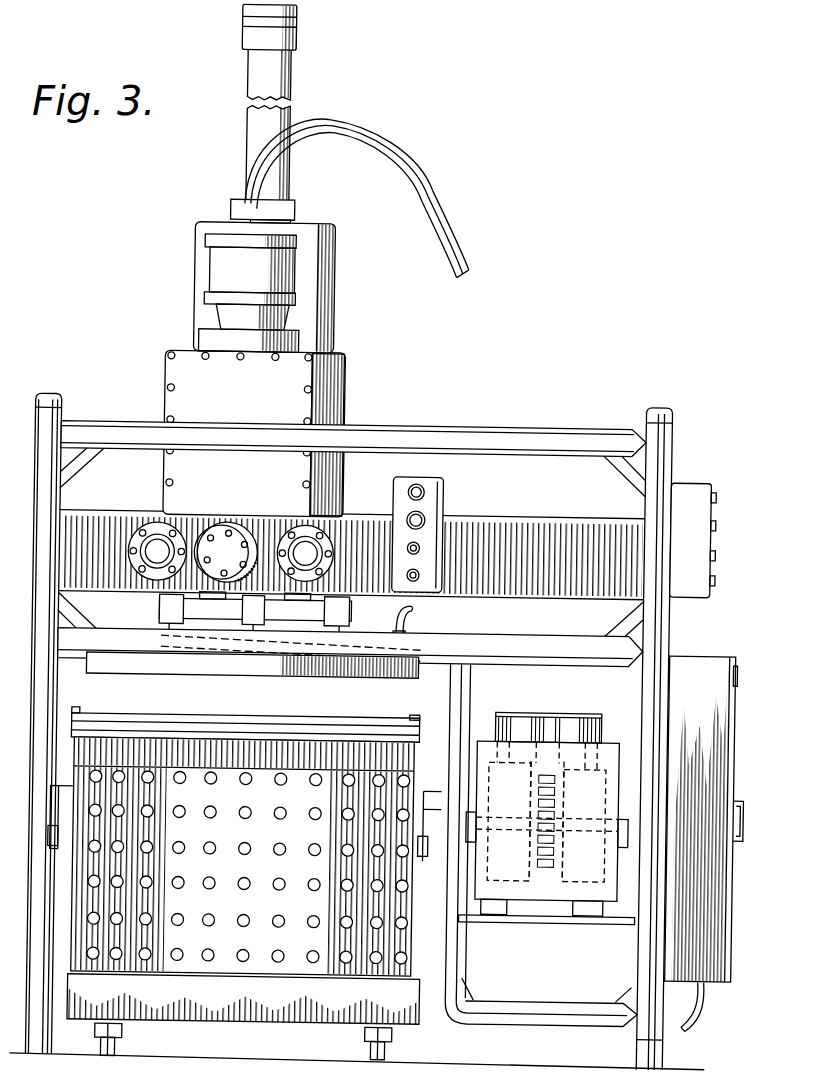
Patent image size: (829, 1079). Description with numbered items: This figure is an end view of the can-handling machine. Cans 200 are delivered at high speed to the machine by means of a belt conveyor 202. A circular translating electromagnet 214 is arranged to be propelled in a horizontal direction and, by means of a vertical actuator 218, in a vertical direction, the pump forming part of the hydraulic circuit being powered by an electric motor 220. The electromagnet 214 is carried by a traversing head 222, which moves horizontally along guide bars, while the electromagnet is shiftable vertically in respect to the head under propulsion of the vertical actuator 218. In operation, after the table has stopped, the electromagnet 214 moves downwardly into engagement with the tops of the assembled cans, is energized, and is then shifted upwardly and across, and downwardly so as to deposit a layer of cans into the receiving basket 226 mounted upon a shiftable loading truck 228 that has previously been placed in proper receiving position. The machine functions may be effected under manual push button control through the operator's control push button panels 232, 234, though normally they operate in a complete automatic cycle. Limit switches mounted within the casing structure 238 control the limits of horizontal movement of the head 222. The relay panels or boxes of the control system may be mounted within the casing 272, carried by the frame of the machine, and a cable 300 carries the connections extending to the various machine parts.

The cans 200 is at (573, 717).
The belt conveyor 202 is at (552, 892).
The circular translating electromagnet 214 is at (215, 671).
The vertical actuator 218 is at (242, 149).
The electric motor 220 is at (215, 273).
The traversing head 222 is at (190, 381).
The receiving basket 226 is at (126, 754).
The shiftable loading truck 228 is at (190, 1023).
The control push button panel 232 is at (687, 490).
The control push button panel 234 is at (428, 489).
The casing structure 238 is at (229, 538).
The casing 272 is at (691, 663).
The cable 300 is at (695, 1010).